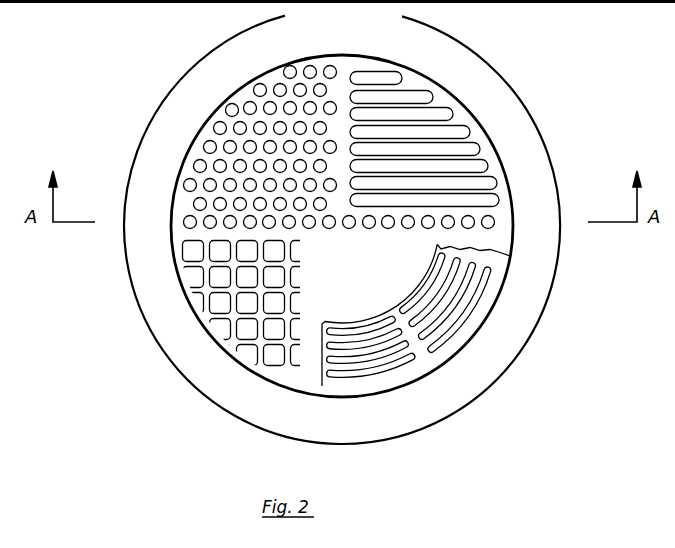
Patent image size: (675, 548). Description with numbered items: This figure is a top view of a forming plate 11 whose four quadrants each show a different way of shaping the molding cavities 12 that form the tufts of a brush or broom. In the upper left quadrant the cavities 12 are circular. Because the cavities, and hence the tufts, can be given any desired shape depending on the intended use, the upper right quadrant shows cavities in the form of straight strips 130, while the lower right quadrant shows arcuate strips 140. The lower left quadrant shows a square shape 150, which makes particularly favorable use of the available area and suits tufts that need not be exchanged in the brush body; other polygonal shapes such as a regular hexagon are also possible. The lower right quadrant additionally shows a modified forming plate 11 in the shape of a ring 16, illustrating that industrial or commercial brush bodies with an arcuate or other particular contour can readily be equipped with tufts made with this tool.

The forming plate 11 is at (130, 2).
The cavities 12 is at (263, 92).
The ring 16 is at (445, 250).
The straight strips 130 is at (443, 116).
The arcuate strips 140 is at (455, 296).
The square shape 150 is at (223, 280).